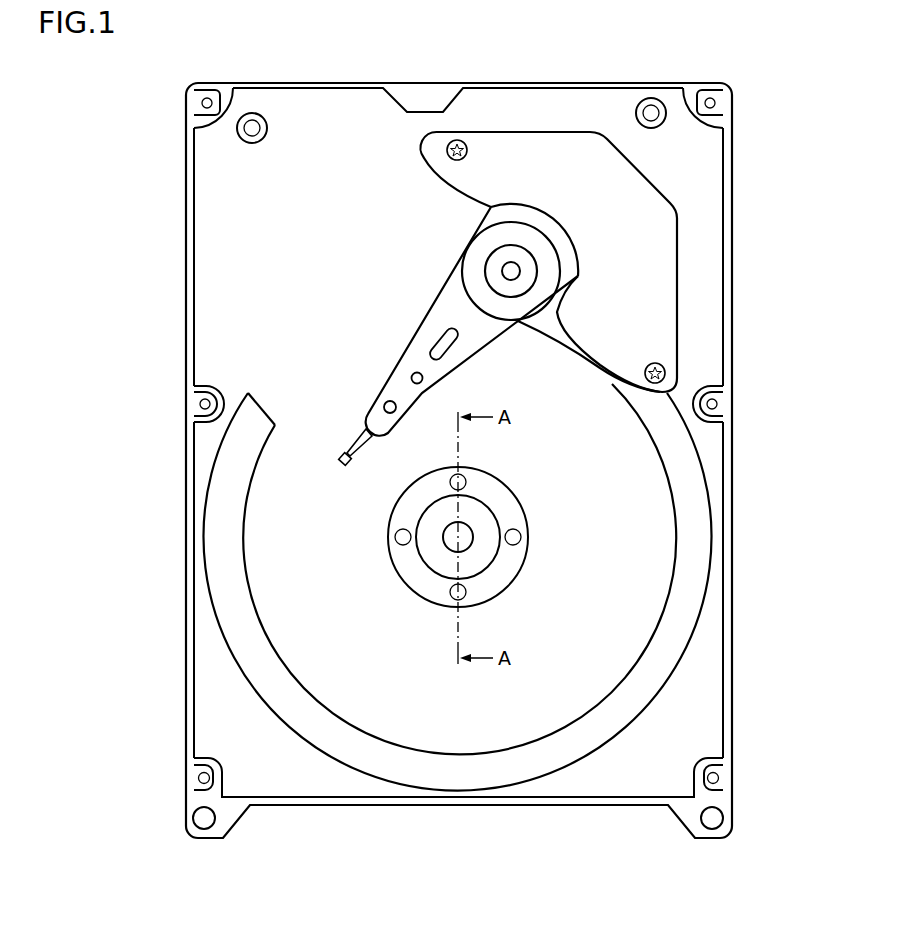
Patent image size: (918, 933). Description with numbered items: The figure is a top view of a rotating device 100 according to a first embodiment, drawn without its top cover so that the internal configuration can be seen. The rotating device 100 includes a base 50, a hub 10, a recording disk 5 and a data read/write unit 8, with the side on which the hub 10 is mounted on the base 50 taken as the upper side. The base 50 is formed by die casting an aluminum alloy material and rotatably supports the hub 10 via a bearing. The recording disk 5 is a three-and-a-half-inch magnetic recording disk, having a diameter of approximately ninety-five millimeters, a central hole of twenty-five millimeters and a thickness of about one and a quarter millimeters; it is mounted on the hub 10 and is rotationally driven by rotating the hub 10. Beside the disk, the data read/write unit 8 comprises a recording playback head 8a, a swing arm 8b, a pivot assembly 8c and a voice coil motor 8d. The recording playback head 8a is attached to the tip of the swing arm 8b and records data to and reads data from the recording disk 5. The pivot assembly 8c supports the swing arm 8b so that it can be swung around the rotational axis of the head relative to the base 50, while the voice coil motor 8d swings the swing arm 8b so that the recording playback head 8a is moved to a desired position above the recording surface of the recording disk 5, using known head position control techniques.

The rotating device 100 is at (477, 914).
The base 50 is at (700, 216).
The recording disk 5 is at (648, 571).
The hub 10 is at (482, 519).
The data read/write unit 8 is at (117, 168).
The recording playback head 8a is at (342, 452).
The swing arm 8b is at (434, 305).
The pivot assembly 8c is at (484, 250).
The voice coil motor 8d is at (500, 175).